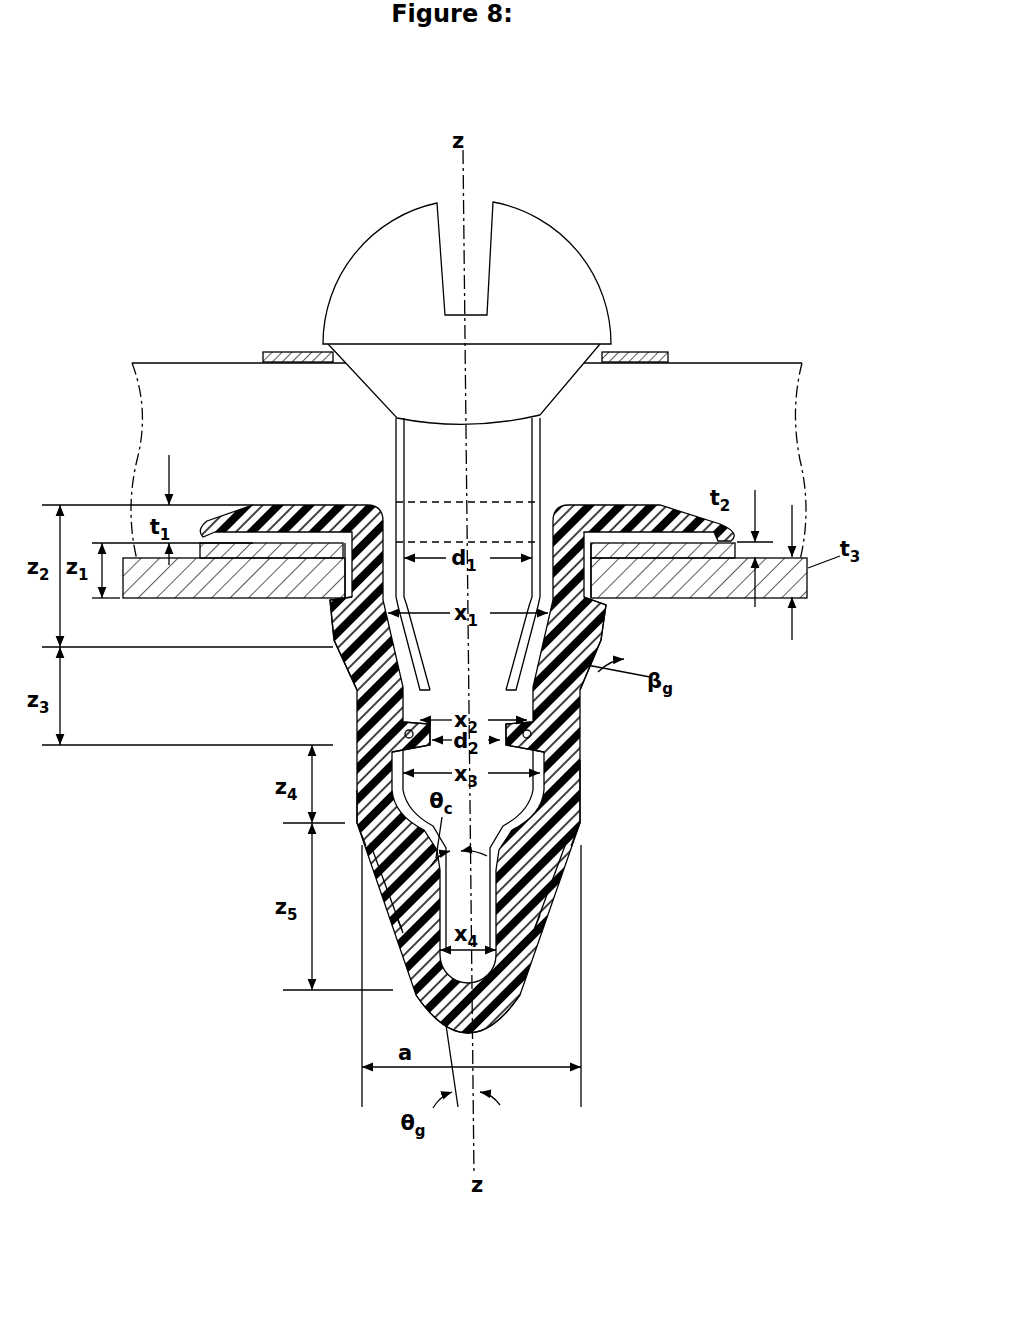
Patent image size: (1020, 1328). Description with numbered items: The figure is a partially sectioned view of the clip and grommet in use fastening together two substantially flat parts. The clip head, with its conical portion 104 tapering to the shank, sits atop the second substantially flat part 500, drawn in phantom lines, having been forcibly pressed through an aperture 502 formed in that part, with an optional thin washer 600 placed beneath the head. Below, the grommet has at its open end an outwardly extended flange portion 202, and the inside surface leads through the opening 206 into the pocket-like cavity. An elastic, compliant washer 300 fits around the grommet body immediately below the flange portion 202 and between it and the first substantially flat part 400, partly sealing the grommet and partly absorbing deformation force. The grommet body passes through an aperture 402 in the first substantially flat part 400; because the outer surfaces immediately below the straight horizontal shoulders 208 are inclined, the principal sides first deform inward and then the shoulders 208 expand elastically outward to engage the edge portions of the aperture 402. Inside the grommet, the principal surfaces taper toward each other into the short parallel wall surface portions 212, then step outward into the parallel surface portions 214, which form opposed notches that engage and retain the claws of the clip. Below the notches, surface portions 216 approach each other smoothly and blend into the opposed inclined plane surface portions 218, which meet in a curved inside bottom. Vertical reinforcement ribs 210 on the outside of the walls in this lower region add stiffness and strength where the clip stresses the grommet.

The conical portion 104 is at (612, 345).
The flange portion 202 is at (553, 503).
The opening 206 is at (541, 413).
The shoulders 208 is at (322, 602).
The reinforcement ribs 210 is at (380, 903).
The principal inside wall surface portions 212 is at (357, 735).
The surface portions 214 is at (362, 823).
The surface portions 216 is at (577, 837).
The plane surface portions 218 is at (397, 933).
The washer 300 is at (700, 550).
The first substantially flat part 400 is at (808, 598).
The aperture 402 is at (333, 605).
The second substantially flat part 500 is at (195, 400).
The aperture 502 is at (396, 478).
The thin washer 600 is at (292, 355).